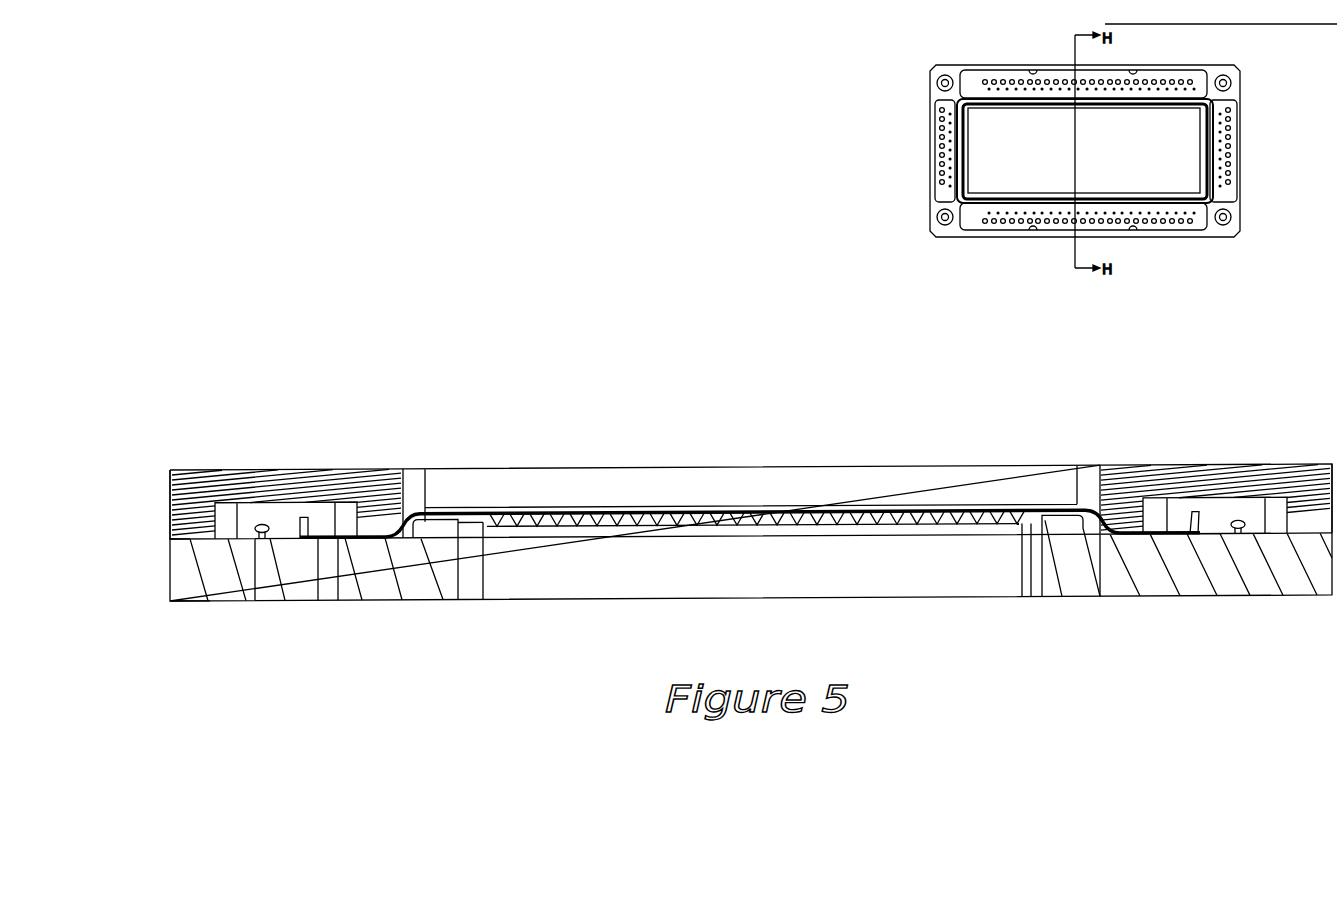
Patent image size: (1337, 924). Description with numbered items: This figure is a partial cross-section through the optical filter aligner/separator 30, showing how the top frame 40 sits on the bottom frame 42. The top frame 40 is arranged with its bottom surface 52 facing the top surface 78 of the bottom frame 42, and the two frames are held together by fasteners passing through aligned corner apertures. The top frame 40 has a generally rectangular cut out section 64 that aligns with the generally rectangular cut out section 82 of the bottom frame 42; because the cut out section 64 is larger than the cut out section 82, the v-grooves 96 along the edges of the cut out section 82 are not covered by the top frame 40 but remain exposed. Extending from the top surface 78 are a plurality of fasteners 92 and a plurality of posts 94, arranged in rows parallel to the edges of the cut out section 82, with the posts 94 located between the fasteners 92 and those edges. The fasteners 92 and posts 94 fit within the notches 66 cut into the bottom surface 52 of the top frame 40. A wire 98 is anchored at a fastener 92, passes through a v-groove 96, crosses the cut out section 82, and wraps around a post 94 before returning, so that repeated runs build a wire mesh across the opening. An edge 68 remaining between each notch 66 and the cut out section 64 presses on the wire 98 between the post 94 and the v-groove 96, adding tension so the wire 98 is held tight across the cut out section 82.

The optical filter aligner/separator 30 is at (254, 263).
The top frame 40 is at (377, 485).
The bottom frame 42 is at (337, 597).
The bottom surface 52 is at (183, 540).
The cut out section 64 is at (958, 492).
The notches 66 is at (282, 518).
The edge 68 is at (445, 513).
The top surface 78 is at (202, 542).
The cut out section 82 is at (832, 572).
The fasteners 92 is at (263, 523).
The posts 94 is at (305, 517).
The v-grooves 96 is at (490, 515).
The wire 98 is at (497, 512).